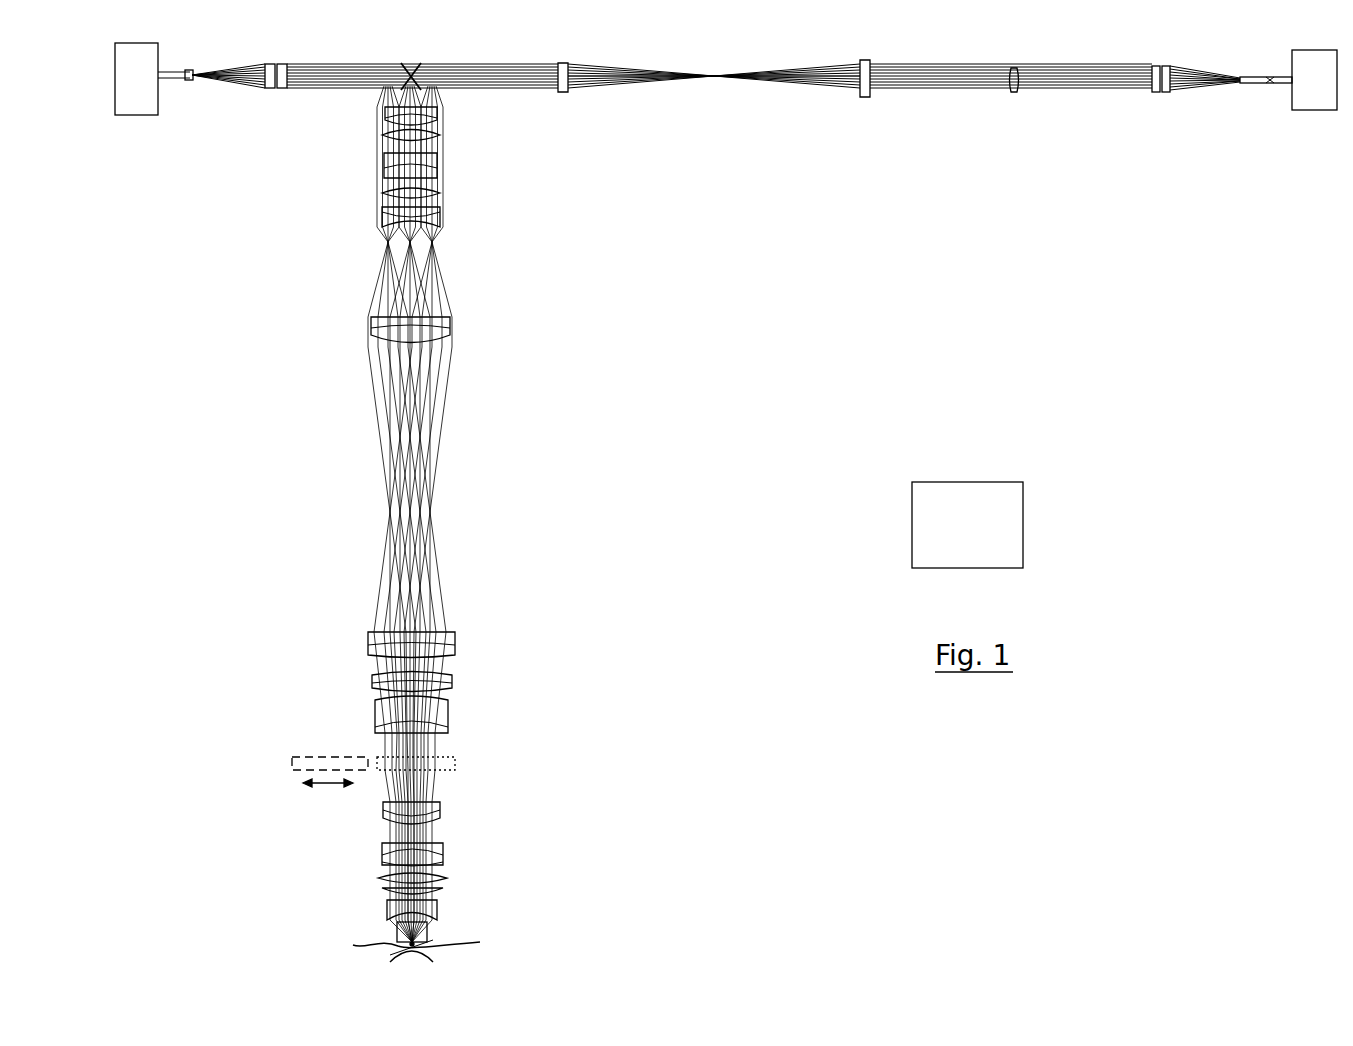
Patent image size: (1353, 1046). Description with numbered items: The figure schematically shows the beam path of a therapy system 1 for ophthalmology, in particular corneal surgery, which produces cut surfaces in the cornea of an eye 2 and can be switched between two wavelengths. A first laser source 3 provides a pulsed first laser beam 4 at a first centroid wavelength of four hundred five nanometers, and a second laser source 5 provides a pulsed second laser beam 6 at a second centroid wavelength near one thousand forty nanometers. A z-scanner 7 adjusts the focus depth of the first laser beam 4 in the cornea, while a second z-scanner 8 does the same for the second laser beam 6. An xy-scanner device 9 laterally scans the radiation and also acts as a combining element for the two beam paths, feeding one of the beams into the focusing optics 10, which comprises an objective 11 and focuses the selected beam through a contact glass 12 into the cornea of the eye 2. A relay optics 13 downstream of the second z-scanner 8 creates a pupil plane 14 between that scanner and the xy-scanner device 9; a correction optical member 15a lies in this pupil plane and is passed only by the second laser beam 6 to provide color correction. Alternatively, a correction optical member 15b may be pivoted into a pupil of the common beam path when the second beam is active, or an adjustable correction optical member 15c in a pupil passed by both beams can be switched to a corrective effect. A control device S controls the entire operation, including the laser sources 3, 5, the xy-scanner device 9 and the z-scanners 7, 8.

The therapy system 1 is at (696, 356).
The eye 2 is at (430, 946).
The first laser source 3 is at (150, 108).
The first laser beam 4 is at (172, 78).
The second laser source 5 is at (1317, 105).
The second laser beam 6 is at (1280, 87).
The z-scanner 7 is at (250, 108).
The second z-scanner 8 is at (1201, 117).
The xy-scanner device 9 is at (417, 80).
The focusing optics 10 is at (307, 486).
The objective 11 is at (500, 800).
The contact glass 12 is at (353, 945).
The relay optics 13 is at (870, 122).
The pupil plane 14 is at (1013, 112).
The correction optical member 15a is at (1012, 90).
The correction optical member 15b is at (303, 762).
The adjustable correction optical member 15c is at (448, 758).
The control device S is at (1023, 568).